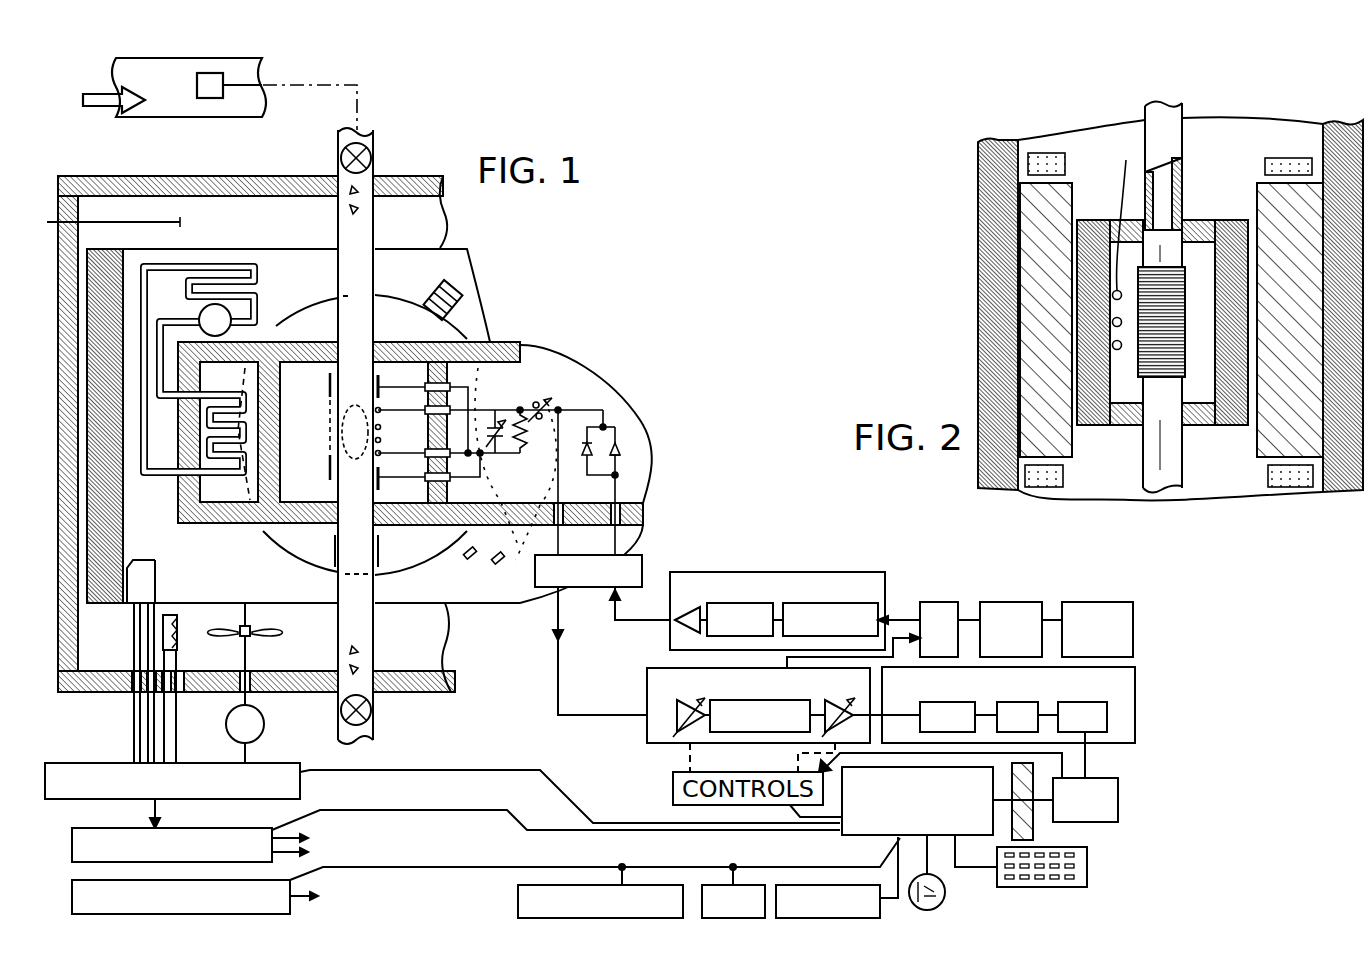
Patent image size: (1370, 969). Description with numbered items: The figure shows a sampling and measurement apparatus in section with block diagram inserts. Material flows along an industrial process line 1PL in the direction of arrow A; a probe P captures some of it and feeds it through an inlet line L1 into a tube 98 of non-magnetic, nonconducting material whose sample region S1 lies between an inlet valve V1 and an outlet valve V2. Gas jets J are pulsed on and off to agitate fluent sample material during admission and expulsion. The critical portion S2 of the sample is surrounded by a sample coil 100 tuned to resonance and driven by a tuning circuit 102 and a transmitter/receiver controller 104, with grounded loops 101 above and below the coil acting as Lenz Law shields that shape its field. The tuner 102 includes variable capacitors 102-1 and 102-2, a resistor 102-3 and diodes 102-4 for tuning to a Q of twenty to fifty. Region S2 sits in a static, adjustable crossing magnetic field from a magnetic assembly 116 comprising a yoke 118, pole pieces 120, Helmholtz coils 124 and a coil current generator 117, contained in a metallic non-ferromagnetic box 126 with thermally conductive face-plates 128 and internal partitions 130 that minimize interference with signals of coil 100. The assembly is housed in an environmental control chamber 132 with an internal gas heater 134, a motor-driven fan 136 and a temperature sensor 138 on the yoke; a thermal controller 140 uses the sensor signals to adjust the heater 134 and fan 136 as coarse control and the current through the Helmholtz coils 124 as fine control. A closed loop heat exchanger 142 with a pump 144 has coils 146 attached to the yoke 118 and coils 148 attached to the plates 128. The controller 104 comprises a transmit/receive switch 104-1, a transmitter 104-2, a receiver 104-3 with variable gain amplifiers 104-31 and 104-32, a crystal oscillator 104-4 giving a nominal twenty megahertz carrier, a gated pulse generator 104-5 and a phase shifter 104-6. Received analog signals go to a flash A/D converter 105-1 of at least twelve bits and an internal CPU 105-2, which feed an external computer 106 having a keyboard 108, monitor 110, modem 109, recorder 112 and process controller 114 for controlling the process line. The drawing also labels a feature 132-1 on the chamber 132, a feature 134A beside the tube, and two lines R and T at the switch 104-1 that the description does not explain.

In FIG. 1, the industrial process line 1PL is at (115, 67).
In FIG. 1, the probe P is at (197, 79).
In FIG. 1, the arrow A is at (94, 106).
In FIG. 1, the inlet line L1 is at (366, 98).
In FIG. 1, the inlet valve V1 is at (371, 146).
In FIG. 1, the outlet valve V2 is at (372, 716).
In FIG. 1, the gas jets J is at (367, 220).
In FIG. 1, the sample region S1 is at (368, 259).
In FIG. 1, the critical sample region S2 is at (355, 432).
In FIG. 1, the environmental control chamber 132 is at (224, 176).
In FIG. 1, the enclosure port 132-1 is at (115, 220).
In FIG. 1, the tube 98 is at (375, 234).
In FIG. 2, the tube 98 is at (1144, 122).
In FIG. 1, the yoke 118 is at (94, 248).
In FIG. 2, the yoke 118 is at (998, 236).
In FIG. 1, the closed loop heat exchanger 142 is at (195, 262).
In FIG. 1, the heat exchanger coils 146 is at (240, 262).
In FIG. 1, the box 126 is at (295, 309).
In FIG. 1, the Helmholtz coils 124 is at (434, 282).
In FIG. 2, the Helmholtz coils 124 is at (1285, 160).
In FIG. 1, the pump 144 is at (200, 311).
In FIG. 1, the face-plates 128 is at (260, 358).
In FIG. 2, the face-plates 128 is at (1100, 208).
In FIG. 1, the pole pieces 120 is at (460, 335).
In FIG. 2, the pole pieces 120 is at (1262, 197).
In FIG. 1, the tuning circuit 102 is at (512, 398).
In FIG. 1, the variable capacitor 102-1 is at (488, 417).
In FIG. 1, the variable capacitor 102-2 is at (538, 400).
In FIG. 1, the resistor 102-3 is at (522, 480).
In FIG. 1, the diodes 102-4 is at (605, 438).
In FIG. 1, the grounded loops 101 is at (328, 400).
In FIG. 2, the grounded loops 101 is at (1185, 246).
In FIG. 1, the sample coil 100 is at (323, 404).
In FIG. 2, the sample coil 100 is at (1185, 295).
In FIG. 1, the heat exchanger coils 148 is at (205, 476).
In FIG. 2, the heat exchanger coils 148 is at (1124, 188).
In FIG. 1, the temperature sensor 138 is at (124, 564).
In FIG. 1, the internal partitions 130 is at (250, 505).
In FIG. 1, the fan 136 is at (245, 610).
In FIG. 1, the spherical shell 134A is at (322, 570).
In FIG. 1, the internal gas heater 134 is at (178, 648).
In FIG. 1, the receive terminal R is at (544, 545).
In FIG. 1, the transmit terminal T is at (600, 545).
In FIG. 1, the transmitter/receiver controller 104 is at (522, 662).
In FIG. 1, the transmit/receive switch 104-1 is at (642, 564).
In FIG. 1, the transmitter 104-2 is at (670, 641).
In FIG. 1, the receiver 104-3 is at (647, 692).
In FIG. 1, the variable gain amplifier element 104-31 is at (673, 747).
In FIG. 1, the variable gain amplifier element 104-32 is at (830, 721).
In FIG. 1, the crystal oscillator 104-4 is at (1084, 602).
In FIG. 1, the gated pulse generator 104-5 is at (1012, 600).
In FIG. 1, the phase shifter 104-6 is at (940, 600).
In FIG. 1, the flash A/D converter 105-1 is at (1135, 701).
In FIG. 1, the CPU element 105-2 is at (1108, 778).
In FIG. 1, the thermal controller 140 is at (69, 762).
In FIG. 1, the coil current generator 117 is at (74, 828).
In FIG. 1, the magnetic assembly 116 is at (74, 883).
In FIG. 2, the magnetic assembly 116 is at (1038, 117).
In FIG. 1, the process controller 114 is at (518, 903).
In FIG. 1, the recorder 112 is at (708, 885).
In FIG. 1, the modem 109 is at (793, 885).
In FIG. 1, the external computer 106 is at (873, 837).
In FIG. 1, the monitor 110 is at (945, 897).
In FIG. 1, the keyboard 108 is at (1088, 866).